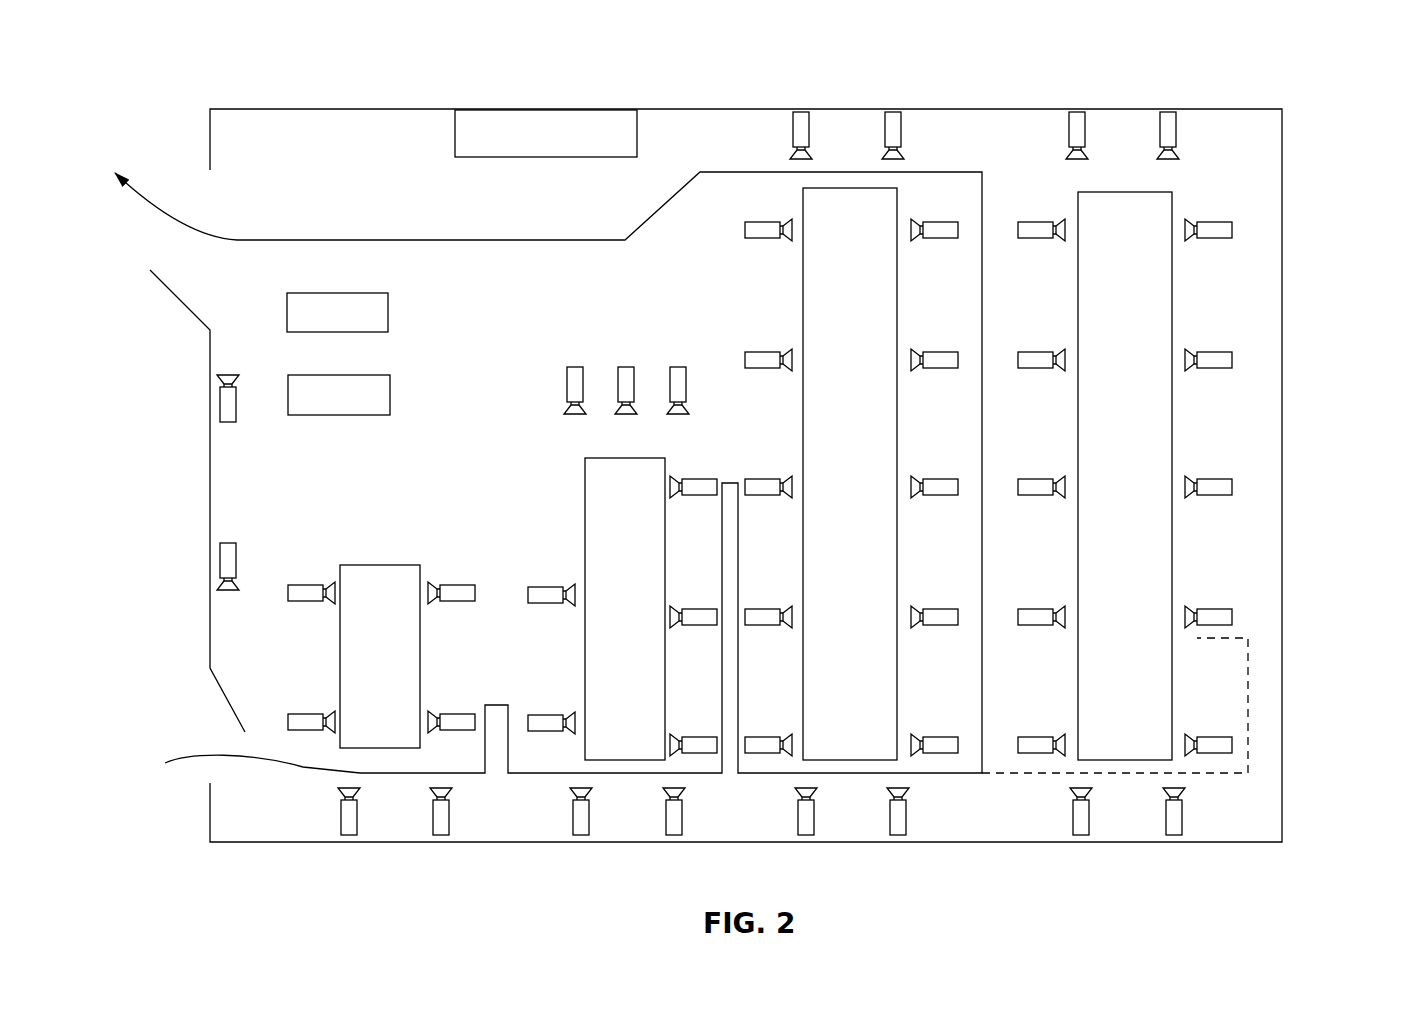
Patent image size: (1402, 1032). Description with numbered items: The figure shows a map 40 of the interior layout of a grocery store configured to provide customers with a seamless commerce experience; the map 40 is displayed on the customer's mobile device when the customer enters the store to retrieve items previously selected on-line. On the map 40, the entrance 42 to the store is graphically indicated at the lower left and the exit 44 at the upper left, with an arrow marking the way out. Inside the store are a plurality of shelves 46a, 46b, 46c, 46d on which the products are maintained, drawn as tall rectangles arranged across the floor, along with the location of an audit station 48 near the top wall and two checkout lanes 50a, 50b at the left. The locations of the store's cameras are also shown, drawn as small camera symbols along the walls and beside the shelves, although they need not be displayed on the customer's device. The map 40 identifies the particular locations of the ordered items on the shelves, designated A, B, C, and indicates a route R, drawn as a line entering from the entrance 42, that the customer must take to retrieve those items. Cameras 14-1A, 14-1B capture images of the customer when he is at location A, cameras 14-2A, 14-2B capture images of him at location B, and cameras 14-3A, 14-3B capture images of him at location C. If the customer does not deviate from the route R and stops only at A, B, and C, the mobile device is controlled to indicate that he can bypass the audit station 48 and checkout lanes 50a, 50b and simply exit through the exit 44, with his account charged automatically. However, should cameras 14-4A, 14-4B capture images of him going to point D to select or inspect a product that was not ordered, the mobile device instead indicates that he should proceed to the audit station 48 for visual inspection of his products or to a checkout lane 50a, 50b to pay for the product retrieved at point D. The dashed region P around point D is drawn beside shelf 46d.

The map 40 is at (1208, 60).
The entrance 42 is at (230, 742).
The exit 44 is at (218, 192).
The shelf 46a is at (397, 674).
The shelf 46b is at (650, 666).
The shelf 46c is at (864, 676).
The shelf 46d is at (1142, 681).
The audit station 48 is at (556, 146).
The checkout lane 50a is at (358, 324).
The checkout lane 50b is at (358, 406).
The camera 14-1A is at (442, 835).
The camera 14-1B is at (455, 712).
The camera 14-2A is at (682, 367).
The camera 14-2B is at (693, 479).
The camera 14-3A is at (906, 828).
The camera 14-3B is at (958, 742).
The camera 14-4A is at (895, 112).
The camera 14-4B is at (947, 243).
The location of ordered item A is at (397, 721).
The location of ordered item B is at (645, 498).
The location of ordered item C is at (872, 716).
The point D is at (1145, 635).
The region of interest P is at (1247, 683).
The route R is at (302, 768).